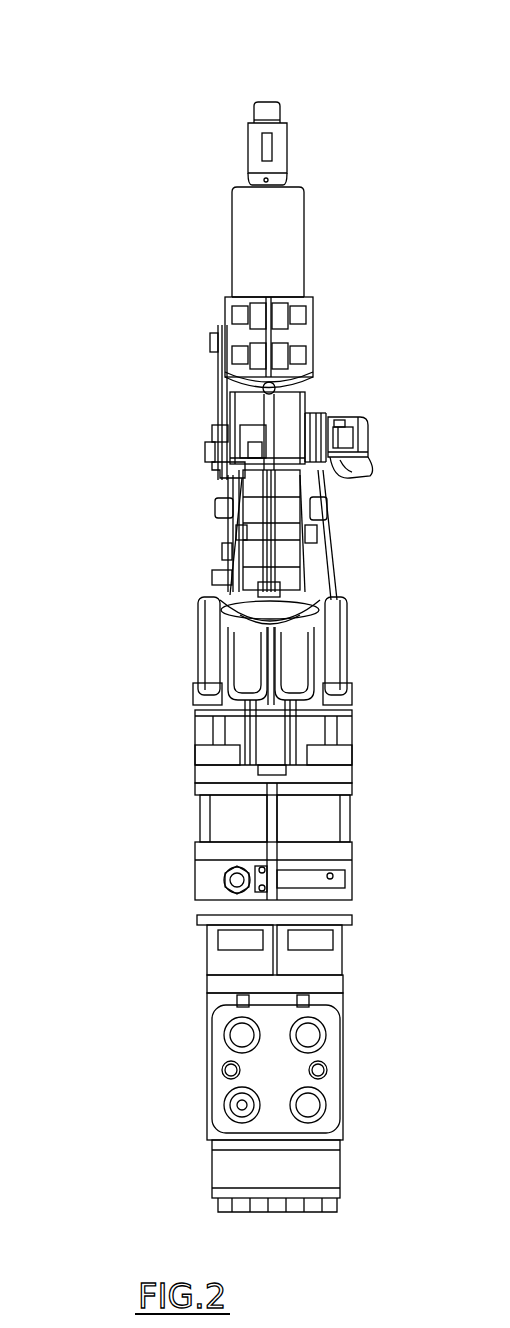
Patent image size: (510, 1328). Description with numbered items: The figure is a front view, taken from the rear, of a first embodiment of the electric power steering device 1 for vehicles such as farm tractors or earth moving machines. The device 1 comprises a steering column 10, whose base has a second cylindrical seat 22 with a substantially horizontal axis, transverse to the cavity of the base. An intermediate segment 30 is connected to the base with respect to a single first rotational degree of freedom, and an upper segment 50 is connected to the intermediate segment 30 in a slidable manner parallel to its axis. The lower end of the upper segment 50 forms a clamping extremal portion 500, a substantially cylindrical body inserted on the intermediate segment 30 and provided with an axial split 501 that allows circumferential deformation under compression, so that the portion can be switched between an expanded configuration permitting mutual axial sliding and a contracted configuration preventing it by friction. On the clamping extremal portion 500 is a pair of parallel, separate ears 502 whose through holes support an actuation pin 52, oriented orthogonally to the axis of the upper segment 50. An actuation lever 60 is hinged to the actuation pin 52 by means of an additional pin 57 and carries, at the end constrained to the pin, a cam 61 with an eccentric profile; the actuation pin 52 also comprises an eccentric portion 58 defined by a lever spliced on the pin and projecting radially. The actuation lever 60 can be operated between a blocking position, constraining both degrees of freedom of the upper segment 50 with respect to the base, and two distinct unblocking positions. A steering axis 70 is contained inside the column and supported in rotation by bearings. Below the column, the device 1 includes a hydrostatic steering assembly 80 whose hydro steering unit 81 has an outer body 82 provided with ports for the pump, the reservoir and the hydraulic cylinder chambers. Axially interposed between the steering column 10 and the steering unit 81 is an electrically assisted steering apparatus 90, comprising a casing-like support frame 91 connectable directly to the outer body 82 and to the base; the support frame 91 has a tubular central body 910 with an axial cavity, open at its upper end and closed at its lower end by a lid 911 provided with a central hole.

The electric power steering device 1 is at (82, 57).
The steering column 10 is at (169, 185).
The steering axis 70 is at (288, 127).
The upper segment 50 is at (302, 260).
The clamping extremal portion 500 is at (303, 397).
The axial split 501 is at (262, 404).
The ears 502 is at (258, 442).
The eccentric portion 58 is at (217, 433).
The additional pin 57 is at (345, 420).
The actuation pin 52 is at (343, 438).
The actuation lever 60 is at (372, 452).
The cam 61 is at (330, 460).
The intermediate segment 30 is at (302, 556).
The second cylindrical seat 22 is at (322, 600).
The electrically assisted steering apparatus 90 is at (318, 793).
The central body 910 is at (243, 803).
The support frame 91 is at (228, 830).
The lid 911 is at (287, 903).
The outer body 82 is at (308, 998).
The hydro steering unit 81 is at (295, 1072).
The hydrostatic steering assembly 80 is at (323, 1176).